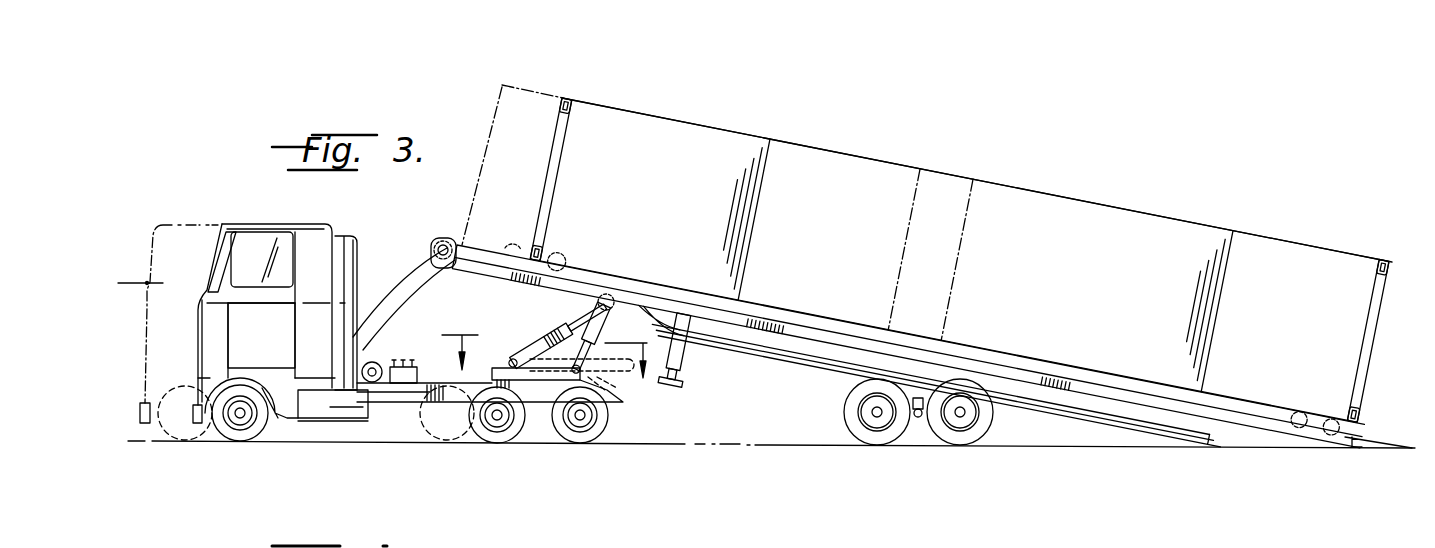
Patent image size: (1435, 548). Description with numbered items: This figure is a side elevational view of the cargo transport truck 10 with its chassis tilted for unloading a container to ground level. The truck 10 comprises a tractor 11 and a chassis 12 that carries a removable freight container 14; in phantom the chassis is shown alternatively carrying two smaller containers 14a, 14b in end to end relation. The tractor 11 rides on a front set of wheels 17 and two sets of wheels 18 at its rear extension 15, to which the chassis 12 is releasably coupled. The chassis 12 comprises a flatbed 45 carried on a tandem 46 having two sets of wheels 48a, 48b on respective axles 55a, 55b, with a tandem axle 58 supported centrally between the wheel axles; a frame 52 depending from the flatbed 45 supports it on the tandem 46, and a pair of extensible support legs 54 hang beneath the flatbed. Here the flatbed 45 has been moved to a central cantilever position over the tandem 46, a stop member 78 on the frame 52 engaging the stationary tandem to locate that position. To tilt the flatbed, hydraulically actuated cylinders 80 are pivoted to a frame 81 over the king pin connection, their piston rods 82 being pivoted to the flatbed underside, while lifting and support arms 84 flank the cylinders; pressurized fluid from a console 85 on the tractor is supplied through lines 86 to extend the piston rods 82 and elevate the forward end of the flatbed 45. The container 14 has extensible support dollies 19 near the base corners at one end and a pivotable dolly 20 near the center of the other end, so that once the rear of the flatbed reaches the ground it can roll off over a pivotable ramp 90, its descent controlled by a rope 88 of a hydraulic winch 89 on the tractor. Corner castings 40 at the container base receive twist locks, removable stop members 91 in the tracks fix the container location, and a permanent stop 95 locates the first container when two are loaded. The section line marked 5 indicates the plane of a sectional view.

The cargo transport truck 10 is at (793, 133).
The tractor 11 is at (246, 224).
The chassis 12 is at (777, 370).
The container 14 is at (1120, 218).
The first container 14a is at (492, 122).
The second container 14b is at (963, 205).
The rear extension 15 is at (446, 385).
The front set of wheels 17 is at (182, 437).
The rear wheels 18 is at (420, 437).
The support dollies 19 is at (1323, 418).
The pivotable support dolly 20 is at (575, 264).
The corner casting 40 is at (540, 252).
The flatbed 45 is at (1043, 362).
The tandem 46 is at (917, 427).
The tandem wheels 48a is at (867, 442).
The tandem wheels 48b is at (967, 442).
The frame 52 is at (1085, 403).
The extensible support legs 54 is at (690, 353).
The axle 55a is at (873, 413).
The axle 55b is at (965, 413).
The tandem axle 58 is at (923, 403).
The stop member 78 is at (832, 380).
The hydraulically actuated cylinders 80 is at (590, 360).
The frame 81 is at (537, 373).
The piston rod 82 is at (613, 303).
The lifting and support arms 84 is at (540, 345).
The console 85 is at (420, 386).
The lines 86 is at (390, 285).
The rope 88 is at (396, 316).
The hydraulic actuated winch 89 is at (364, 368).
The pivotable ramp 90 is at (1387, 447).
The removable stop members 91 is at (513, 245).
The permanent stop 95 is at (453, 238).
The section line 5- 5 is at (544, 345).